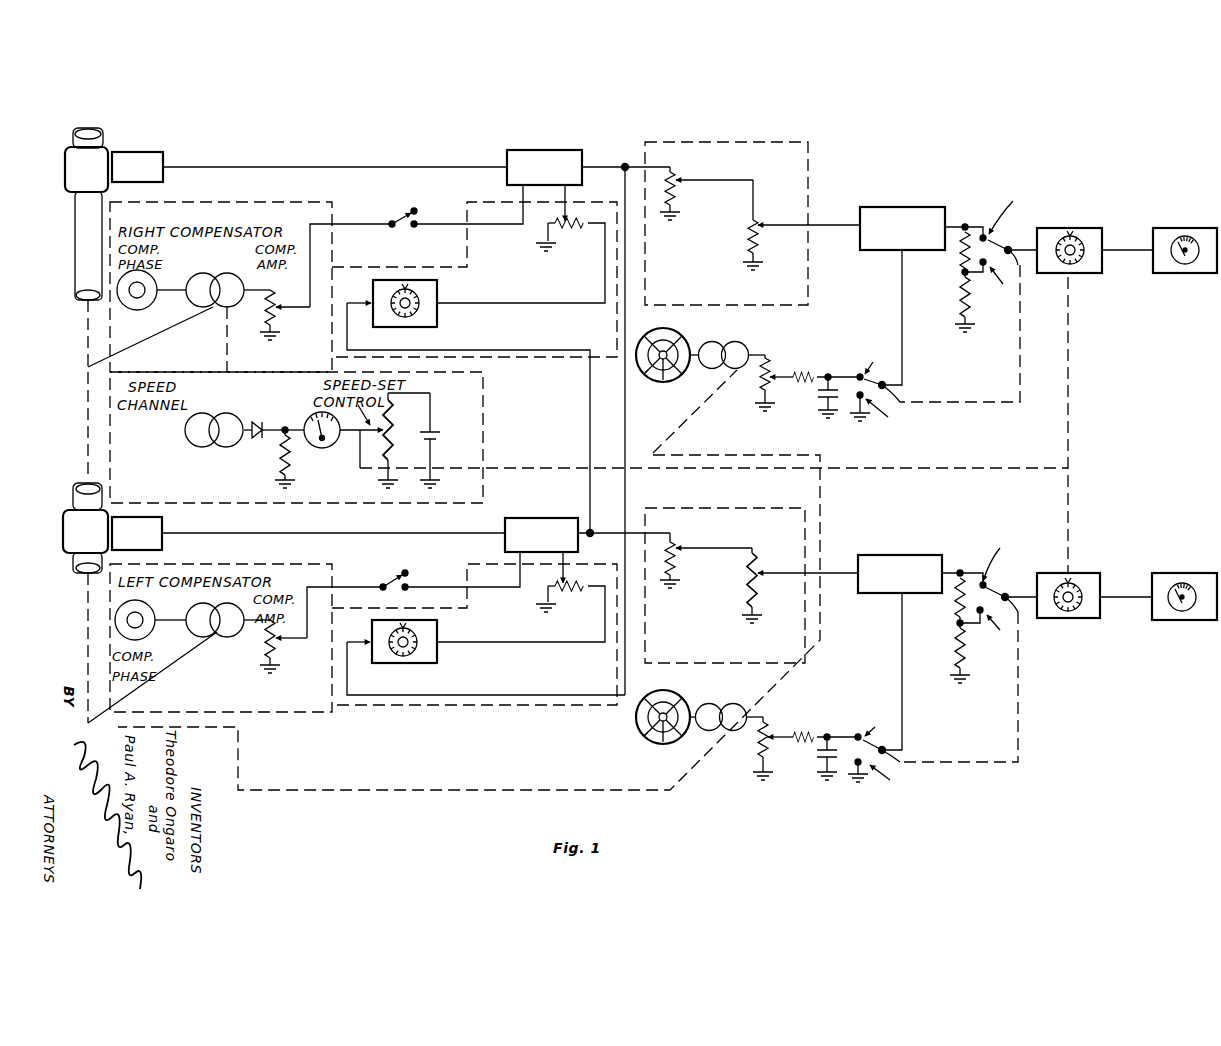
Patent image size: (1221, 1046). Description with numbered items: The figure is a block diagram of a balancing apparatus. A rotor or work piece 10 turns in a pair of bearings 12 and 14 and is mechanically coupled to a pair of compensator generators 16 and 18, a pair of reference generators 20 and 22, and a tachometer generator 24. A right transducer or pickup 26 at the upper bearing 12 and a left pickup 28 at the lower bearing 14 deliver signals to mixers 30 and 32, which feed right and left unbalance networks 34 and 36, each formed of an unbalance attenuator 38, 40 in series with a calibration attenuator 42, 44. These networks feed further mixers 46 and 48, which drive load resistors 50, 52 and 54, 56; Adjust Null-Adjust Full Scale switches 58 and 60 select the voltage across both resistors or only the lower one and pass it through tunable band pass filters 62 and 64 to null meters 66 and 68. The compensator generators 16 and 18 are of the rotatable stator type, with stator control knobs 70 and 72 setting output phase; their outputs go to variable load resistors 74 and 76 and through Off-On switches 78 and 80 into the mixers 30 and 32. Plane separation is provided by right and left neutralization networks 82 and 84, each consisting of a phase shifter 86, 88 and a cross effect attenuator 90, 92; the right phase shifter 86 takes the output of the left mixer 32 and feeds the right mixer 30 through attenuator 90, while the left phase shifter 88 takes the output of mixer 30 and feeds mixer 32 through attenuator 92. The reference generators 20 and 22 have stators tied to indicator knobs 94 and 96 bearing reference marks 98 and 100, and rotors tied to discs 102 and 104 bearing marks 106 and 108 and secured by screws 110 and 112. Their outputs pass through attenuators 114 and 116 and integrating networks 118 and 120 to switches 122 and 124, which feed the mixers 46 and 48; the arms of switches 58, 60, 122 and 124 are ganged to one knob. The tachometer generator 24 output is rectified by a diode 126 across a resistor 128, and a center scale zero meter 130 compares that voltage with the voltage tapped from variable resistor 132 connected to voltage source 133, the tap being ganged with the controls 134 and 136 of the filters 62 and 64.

The rotor or work piece 10 is at (96, 133).
The bearing 12 is at (68, 186).
The bearing 14 is at (70, 513).
The compensator generator 16 is at (228, 273).
The compensator generator 18 is at (227, 637).
The reference generator 20 is at (681, 364).
The reference generator 22 is at (676, 719).
The tachometer generator 24 is at (237, 413).
The right transducer or pickup 26 is at (138, 152).
The left transducer or pickup 28 is at (135, 515).
The mixer 30 is at (553, 150).
The mixer 32 is at (540, 517).
The right unbalance unit or network 34 is at (767, 142).
The left unbalance unit or network 36 is at (750, 507).
The unbalance attenuator 38 is at (680, 196).
The unbalance attenuator 40 is at (676, 568).
The calibration attenuator 42 is at (745, 248).
The calibration attenuator 44 is at (745, 594).
The mixer 46 is at (913, 207).
The mixer 48 is at (913, 553).
The load resistor 50 is at (960, 257).
The load resistor 52 is at (960, 298).
The load resistor 54 is at (953, 603).
The load resistor 56 is at (953, 657).
The Adjust Null-Adjust Full Scale switch 58 is at (989, 237).
The Adjust Null-Adjust Full Scale switch 60 is at (991, 587).
The tunable band pass filter 62 is at (1090, 245).
The tunable band pass filter 64 is at (1090, 584).
The null meter 66 is at (1182, 272).
The null meter 68 is at (1186, 620).
The stator control knob 70 is at (136, 311).
The stator control knob 72 is at (146, 616).
The variable load resistor 74 is at (278, 320).
The variable load resistor 76 is at (274, 658).
The Off-On switch 78 is at (402, 230).
The Off-On switch 80 is at (395, 580).
The right neutralization network 82 is at (590, 331).
The left neutralization network 84 is at (592, 679).
The right phase shifter 86 is at (440, 293).
The left phase shifter 88 is at (438, 632).
The cross effect attenuator 90 is at (581, 220).
The cross effect attenuator 92 is at (547, 585).
The indicator knob 94 is at (651, 336).
The indicator knob 96 is at (649, 692).
The reference mark 98 is at (667, 337).
The reference mark 100 is at (666, 697).
The rotatably mounted disc 102 is at (663, 380).
The rotatably mounted disc 104 is at (640, 741).
The reference mark 106 is at (703, 344).
The reference mark 108 is at (700, 704).
The screw 110 is at (641, 363).
The screw 112 is at (637, 724).
The attenuator 114 is at (768, 372).
The attenuator 116 is at (767, 730).
The integrating network 118 is at (808, 397).
The integrating network 120 is at (803, 761).
The Adjust-Null-Adjust-Full Scale switch 122 is at (888, 392).
The Adjust-Null-Adjust-Full Scale switch 124 is at (900, 757).
The diode 126 is at (258, 422).
The resistor 128 is at (292, 460).
The center scale zero meter 130 is at (313, 414).
The variable resistor 132 is at (392, 427).
The voltage source 133 is at (433, 430).
The control of tunable filter 134 is at (1073, 265).
The control of tunable filter 136 is at (1082, 589).